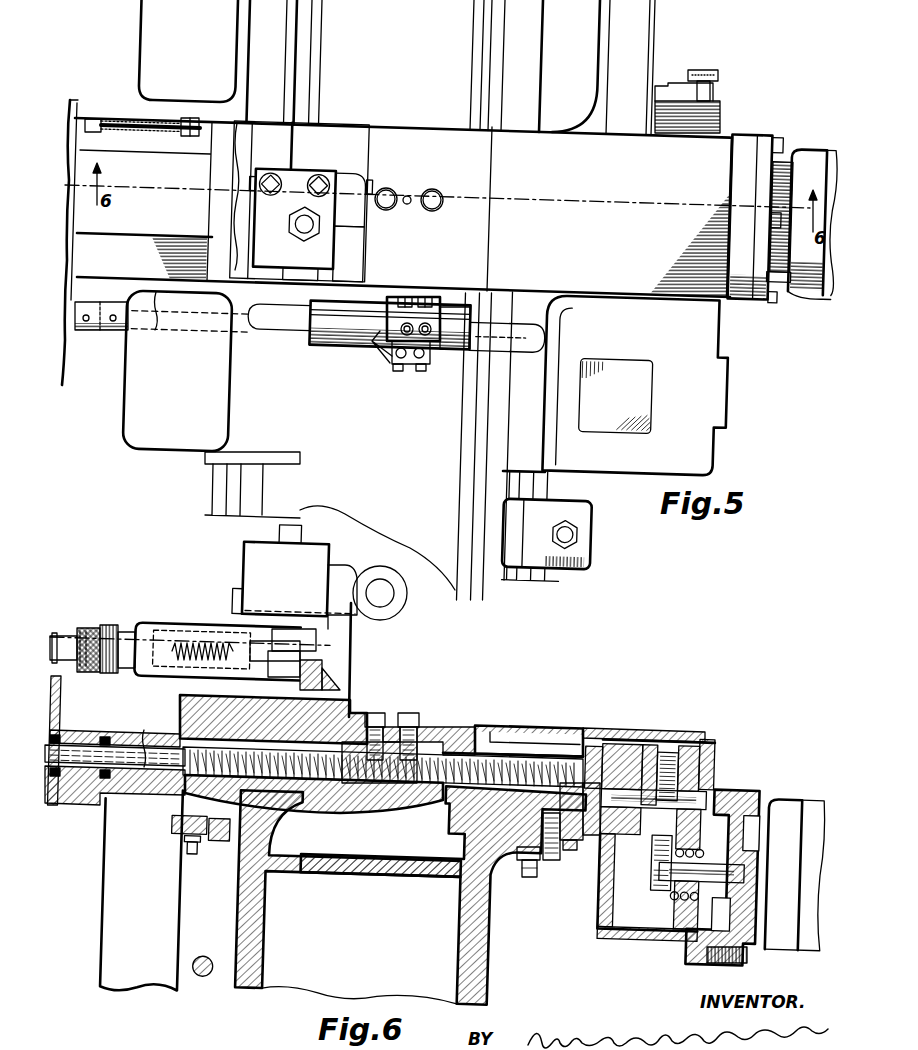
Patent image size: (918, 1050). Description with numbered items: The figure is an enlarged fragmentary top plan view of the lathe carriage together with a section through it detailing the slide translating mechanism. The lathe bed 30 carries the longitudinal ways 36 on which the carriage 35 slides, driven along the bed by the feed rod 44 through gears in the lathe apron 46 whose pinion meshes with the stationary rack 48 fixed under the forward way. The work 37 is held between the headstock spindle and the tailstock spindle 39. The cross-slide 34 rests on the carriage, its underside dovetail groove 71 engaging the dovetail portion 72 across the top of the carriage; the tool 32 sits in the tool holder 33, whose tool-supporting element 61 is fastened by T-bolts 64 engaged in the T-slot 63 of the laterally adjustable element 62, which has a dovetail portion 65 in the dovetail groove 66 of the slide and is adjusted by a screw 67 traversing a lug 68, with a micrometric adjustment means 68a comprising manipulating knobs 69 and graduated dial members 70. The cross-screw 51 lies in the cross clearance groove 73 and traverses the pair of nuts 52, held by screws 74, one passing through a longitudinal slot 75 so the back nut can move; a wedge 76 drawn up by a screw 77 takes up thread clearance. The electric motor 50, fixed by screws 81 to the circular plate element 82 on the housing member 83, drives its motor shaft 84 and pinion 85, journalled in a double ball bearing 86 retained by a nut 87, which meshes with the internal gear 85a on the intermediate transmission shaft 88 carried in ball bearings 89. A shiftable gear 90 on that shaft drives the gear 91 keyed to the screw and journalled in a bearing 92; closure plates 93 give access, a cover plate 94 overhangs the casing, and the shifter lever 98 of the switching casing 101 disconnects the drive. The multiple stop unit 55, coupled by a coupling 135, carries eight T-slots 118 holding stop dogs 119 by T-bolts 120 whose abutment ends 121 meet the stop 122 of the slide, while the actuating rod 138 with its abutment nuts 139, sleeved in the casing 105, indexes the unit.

In FIG. 5, the lathe bed 30 is at (397, 67).
In FIG. 5, the tool 32 is at (372, 188).
In FIG. 6, the tool 32 is at (356, 624).
In FIG. 5, the tool holder 33 is at (330, 176).
In FIG. 5, the cross-slide 34 is at (424, 130).
In FIG. 6, the cross-slide 34 is at (347, 716).
In FIG. 5, the carriage 35 is at (150, 33).
In FIG. 6, the carriage 35 is at (427, 816).
In FIG. 5, the longitudinal ways 36 is at (212, 484).
In FIG. 6, the longitudinal ways 36 is at (205, 812).
In FIG. 6, the work 37 is at (407, 595).
In FIG. 6, the spindle 39 is at (558, 866).
In FIG. 6, the feed rod 44 is at (220, 950).
In FIG. 6, the lathe apron 46 is at (108, 938).
In FIG. 6, the stationary rack 48 is at (215, 844).
In FIG. 5, the electric motor 50 is at (808, 152).
In FIG. 6, the electric motor 50 is at (784, 808).
In FIG. 6, the cross-screw 51 is at (490, 765).
In FIG. 6, the nuts 52 is at (395, 812).
In FIG. 5, the multiple stop unit 55 is at (338, 345).
In FIG. 5, the tool-supporting element 61 is at (330, 256).
In FIG. 6, the tool-supporting element 61 is at (244, 565).
In FIG. 5, the laterally adjustable element 62 is at (227, 292).
In FIG. 6, the laterally adjustable element 62 is at (190, 626).
In FIG. 5, the T-slot 63 is at (292, 140).
In FIG. 6, the T-slot 63 is at (309, 660).
In FIG. 6, the T-bolts 64 is at (310, 648).
In FIG. 6, the dovetail portion 65 is at (307, 681).
In FIG. 6, the dovetail groove 66 is at (330, 685).
In FIG. 6, the screw 67 is at (186, 656).
In FIG. 6, the lug 68 is at (222, 662).
In FIG. 6, the micrometric adjustment means 68a is at (78, 630).
In FIG. 6, the manipulating knobs 69 is at (81, 670).
In FIG. 6, the graduated dial members 70 is at (108, 674).
In FIG. 6, the dovetail groove 71 is at (176, 722).
In FIG. 5, the dovetail portion 72 is at (155, 300).
In FIG. 6, the dovetail portion 72 is at (130, 765).
In FIG. 6, the cross clearance groove 73 is at (205, 780).
In FIG. 5, the screws 74 is at (430, 192).
In FIG. 6, the screws 74 is at (382, 720).
In FIG. 6, the longitudinal slot 75 is at (452, 736).
In FIG. 6, the wedge 76 is at (420, 727).
In FIG. 5, the screw 77 is at (407, 204).
In FIG. 6, the screw 77 is at (413, 718).
In FIG. 5, the screws 81 is at (780, 300).
In FIG. 6, the screws 81 is at (748, 954).
In FIG. 5, the circular plate element 82 is at (751, 299).
In FIG. 6, the circular plate element 82 is at (716, 792).
In FIG. 6, the housing member 83 is at (598, 888).
In FIG. 6, the motor shaft 84 is at (665, 892).
In FIG. 6, the pinion 85 is at (655, 867).
In FIG. 6, the internal gear 85a is at (673, 736).
In FIG. 6, the double ball bearing 86 is at (680, 918).
In FIG. 6, the nut 87 is at (738, 880).
In FIG. 6, the intermediate transmission shaft 88 is at (590, 845).
In FIG. 6, the ball bearings 89 is at (712, 762).
In FIG. 6, the shiftable gear 90 is at (630, 818).
In FIG. 6, the gear 91 is at (644, 733).
In FIG. 6, the bearing 92 is at (598, 747).
In FIG. 6, the closure plates 93 is at (688, 739).
In FIG. 6, the cover plate 94 is at (558, 731).
In FIG. 5, the shifter lever 98 is at (704, 70).
In FIG. 5, the casing 101 is at (720, 112).
In FIG. 5, the casing 105 is at (74, 359).
In FIG. 6, the casing 105 is at (60, 702).
In FIG. 5, the T-slots 118 is at (460, 307).
In FIG. 5, the stop dogs 119 is at (386, 346).
In FIG. 5, the T-bolts 120 is at (410, 365).
In FIG. 5, the abutment ends 121 is at (396, 297).
In FIG. 5, the stop 122 is at (372, 310).
In FIG. 5, the coupling 135 is at (100, 304).
In FIG. 5, the actuating rod 138 is at (112, 123).
In FIG. 5, the abutment nuts 139 is at (193, 117).